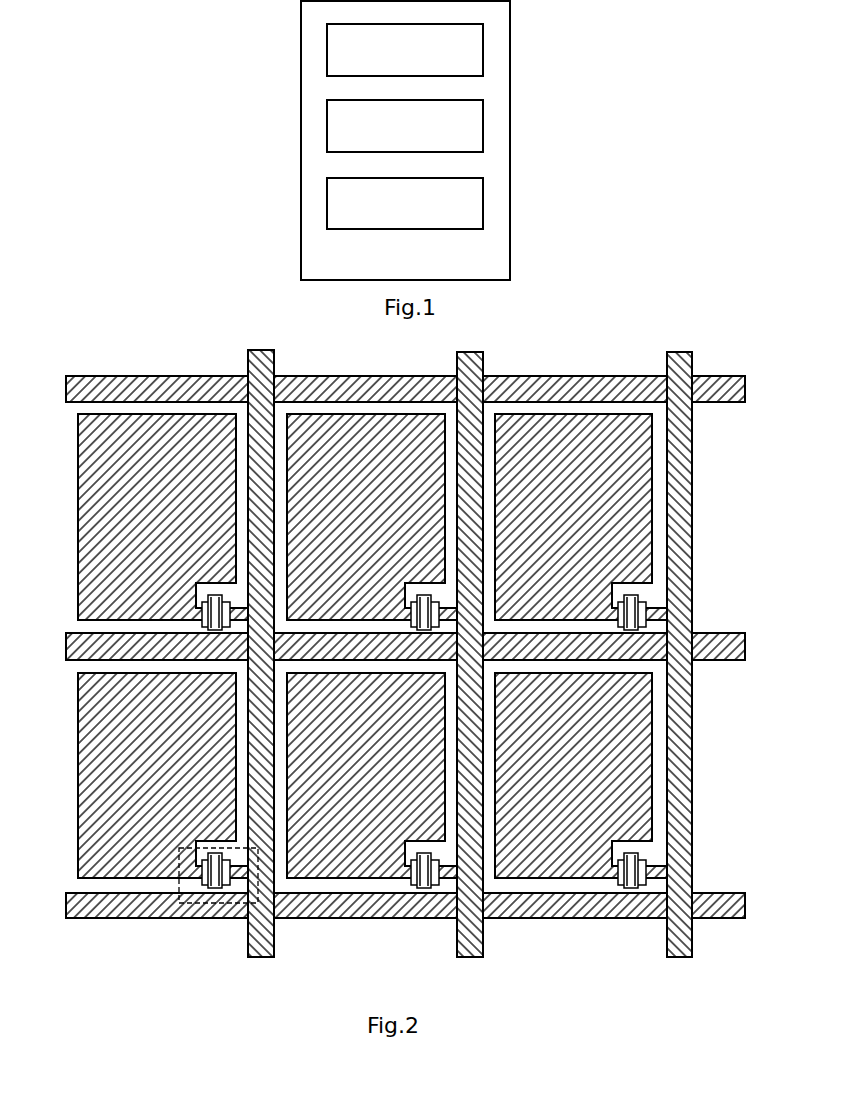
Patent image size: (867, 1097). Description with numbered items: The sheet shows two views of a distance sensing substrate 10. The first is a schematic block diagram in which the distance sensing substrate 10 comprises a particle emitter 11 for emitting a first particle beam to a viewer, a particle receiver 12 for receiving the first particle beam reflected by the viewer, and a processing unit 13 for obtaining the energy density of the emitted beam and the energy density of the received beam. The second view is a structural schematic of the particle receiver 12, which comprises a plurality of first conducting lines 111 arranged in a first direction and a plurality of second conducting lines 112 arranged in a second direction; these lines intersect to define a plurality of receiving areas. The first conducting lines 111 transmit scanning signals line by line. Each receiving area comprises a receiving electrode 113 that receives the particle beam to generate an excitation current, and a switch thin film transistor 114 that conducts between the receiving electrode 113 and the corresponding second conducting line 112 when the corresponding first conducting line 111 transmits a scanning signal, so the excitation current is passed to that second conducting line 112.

In FIG. 1, the distance sensing substrate 10 is at (405, 140).
In FIG. 1, the particle emitter 11 is at (405, 50).
In FIG. 1, the particle receiver 12 is at (405, 125).
In FIG. 1, the processing unit 13 is at (405, 203).
In FIG. 2, the first conducting lines 111 is at (328, 918).
In FIG. 2, the second conducting lines 112 is at (457, 937).
In FIG. 2, the receiving electrode 113 is at (127, 878).
In FIG. 2, the switch thin film transistor 114 is at (215, 903).